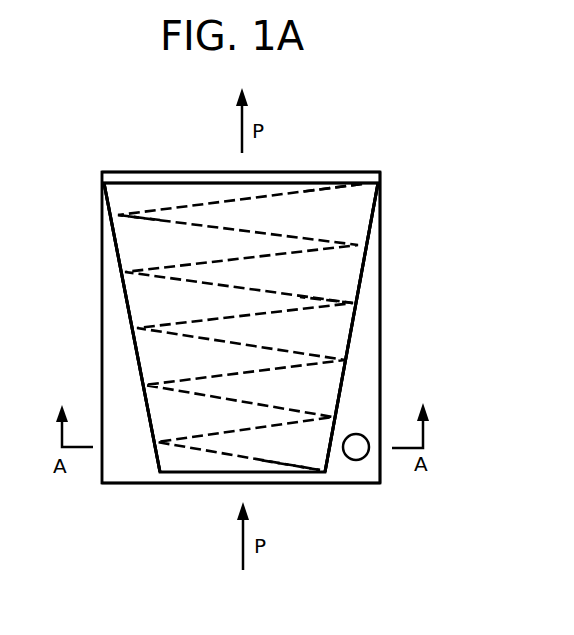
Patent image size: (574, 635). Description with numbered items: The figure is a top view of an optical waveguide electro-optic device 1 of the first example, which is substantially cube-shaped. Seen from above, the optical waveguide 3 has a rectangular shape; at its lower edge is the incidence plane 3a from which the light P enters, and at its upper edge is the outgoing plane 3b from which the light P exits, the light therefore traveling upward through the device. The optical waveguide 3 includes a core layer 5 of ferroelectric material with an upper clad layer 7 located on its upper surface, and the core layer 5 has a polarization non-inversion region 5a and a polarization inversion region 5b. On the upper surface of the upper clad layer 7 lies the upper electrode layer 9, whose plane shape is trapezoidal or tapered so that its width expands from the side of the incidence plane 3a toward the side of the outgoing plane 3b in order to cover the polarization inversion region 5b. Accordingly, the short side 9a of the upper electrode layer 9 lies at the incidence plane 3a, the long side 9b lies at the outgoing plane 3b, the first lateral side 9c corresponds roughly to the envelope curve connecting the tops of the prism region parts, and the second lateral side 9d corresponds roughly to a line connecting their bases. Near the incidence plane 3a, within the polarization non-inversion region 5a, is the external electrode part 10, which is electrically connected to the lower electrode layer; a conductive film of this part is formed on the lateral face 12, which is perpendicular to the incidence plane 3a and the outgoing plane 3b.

The optical waveguide electro-optic device 1 is at (322, 110).
The optical waveguide 3 is at (95, 338).
The incidence plane 3a is at (290, 484).
The outgoing plane 3b is at (170, 171).
The core layer 5 is at (103, 387).
The polarization non-inversion region 5a is at (355, 380).
The polarization inversion region 5b is at (215, 388).
The upper clad layer 7 is at (374, 333).
The upper electrode layer 9 is at (140, 298).
The short side 9a is at (195, 473).
The long side 9b is at (324, 182).
The first lateral side 9c is at (108, 230).
The second lateral side 9d is at (371, 285).
The external electrode part 10 is at (356, 461).
The lateral face 12 is at (104, 265).